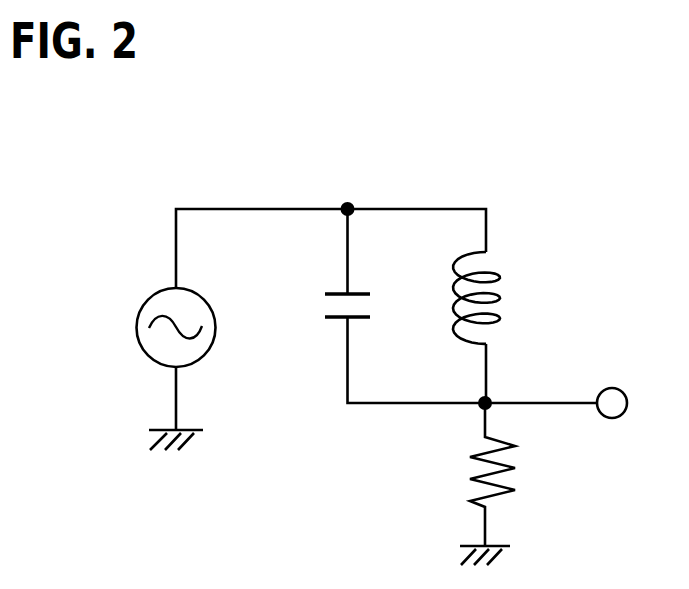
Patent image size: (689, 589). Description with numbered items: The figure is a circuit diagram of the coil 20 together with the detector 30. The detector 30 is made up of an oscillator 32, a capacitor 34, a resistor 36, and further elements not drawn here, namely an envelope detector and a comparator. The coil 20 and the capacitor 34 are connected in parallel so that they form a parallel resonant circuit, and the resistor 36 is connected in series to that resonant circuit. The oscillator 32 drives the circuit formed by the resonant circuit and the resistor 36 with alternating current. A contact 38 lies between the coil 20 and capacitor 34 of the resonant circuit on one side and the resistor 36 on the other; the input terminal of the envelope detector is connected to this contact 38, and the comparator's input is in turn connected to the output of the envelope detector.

The detector 30 is at (160, 172).
The oscillator 32 is at (138, 311).
The capacitor 34 is at (333, 293).
The coil 20 is at (497, 273).
The contact 38 is at (489, 398).
The resistor 36 is at (513, 470).